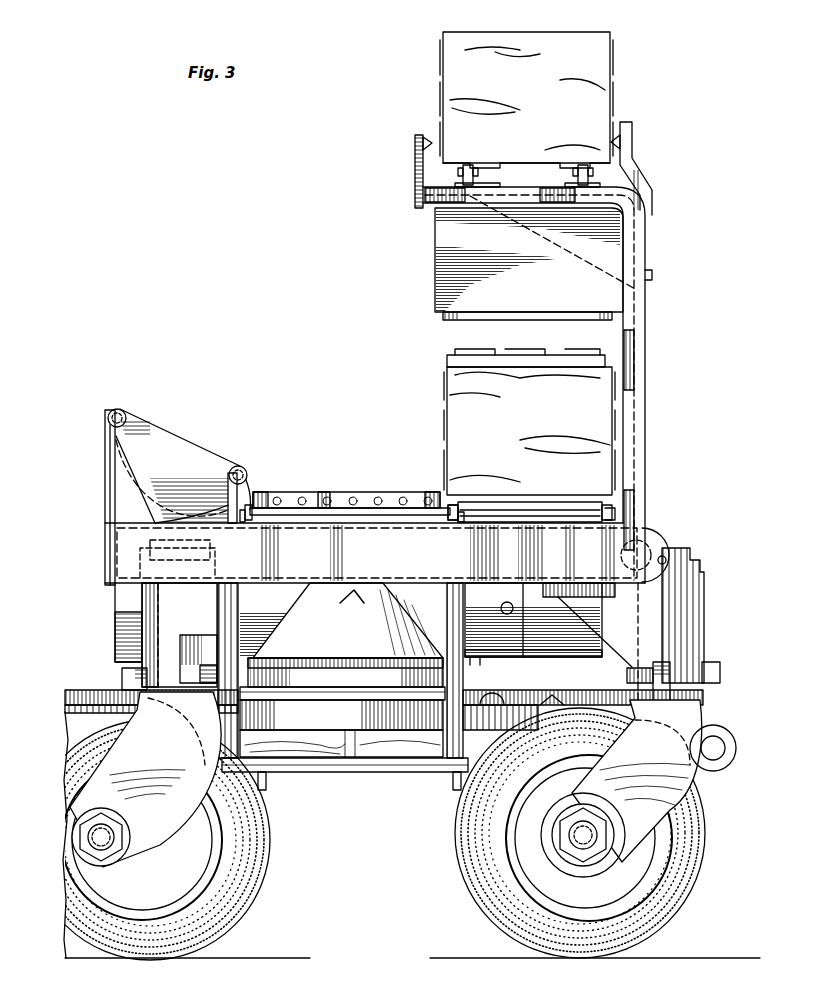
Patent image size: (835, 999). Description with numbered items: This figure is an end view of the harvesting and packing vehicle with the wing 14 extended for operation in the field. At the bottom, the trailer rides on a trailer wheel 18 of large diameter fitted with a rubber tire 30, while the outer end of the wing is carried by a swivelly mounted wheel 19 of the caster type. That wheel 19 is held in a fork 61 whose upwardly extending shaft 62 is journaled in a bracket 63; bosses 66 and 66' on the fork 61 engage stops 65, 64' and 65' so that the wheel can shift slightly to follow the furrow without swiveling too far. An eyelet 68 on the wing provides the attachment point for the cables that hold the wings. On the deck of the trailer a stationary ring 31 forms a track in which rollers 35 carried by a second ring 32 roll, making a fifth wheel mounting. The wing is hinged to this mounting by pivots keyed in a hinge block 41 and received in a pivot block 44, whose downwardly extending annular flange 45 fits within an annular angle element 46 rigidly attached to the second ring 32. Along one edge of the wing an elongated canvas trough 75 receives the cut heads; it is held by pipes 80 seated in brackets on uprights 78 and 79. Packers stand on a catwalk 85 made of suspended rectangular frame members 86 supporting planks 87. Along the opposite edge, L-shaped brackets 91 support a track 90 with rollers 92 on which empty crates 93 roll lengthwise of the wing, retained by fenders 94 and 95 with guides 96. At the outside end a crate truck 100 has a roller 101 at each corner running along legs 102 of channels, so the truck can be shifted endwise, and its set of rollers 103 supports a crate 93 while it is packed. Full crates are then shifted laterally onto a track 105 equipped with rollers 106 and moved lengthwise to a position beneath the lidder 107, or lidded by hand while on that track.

The wing 14 is at (125, 555).
The trailer wheel 18 is at (258, 898).
The swivelly mounted wheel 19 is at (215, 843).
The rubber tire 30 is at (262, 872).
The stationary ring 31 is at (522, 708).
The second ring 32 is at (553, 690).
The rollers 35 is at (362, 698).
The hinge block 41 is at (116, 592).
The pivot block 44 is at (356, 595).
The annular flange 45 is at (362, 668).
The annular angle element 46 is at (322, 672).
The fork 61 is at (138, 745).
The shaft 62 is at (152, 600).
The bracket 63 is at (140, 628).
The stop 64' is at (647, 655).
The stop 65 is at (188, 659).
The stop 65' is at (732, 671).
The boss 66 is at (116, 674).
The boss 66' is at (692, 670).
The eyelet 68 is at (720, 735).
The canvas trough 75 is at (118, 468).
The upright 78 is at (106, 497).
The upright 79 is at (228, 478).
The pipe 80 is at (117, 409).
The catwalk 85 is at (272, 771).
The frame member 86 is at (455, 770).
The plank 87 is at (385, 760).
The track 90 is at (490, 186).
The L-shaped bracket 91 is at (645, 322).
The roller 92 is at (468, 172).
The crate 93 is at (546, 40).
The fender 94 is at (633, 133).
The fender 95 is at (415, 163).
The guide 96 is at (428, 136).
The crate truck 100 is at (320, 492).
The roller 101 is at (252, 505).
The leg 102 is at (243, 522).
The rollers 103 is at (400, 498).
The track 105 is at (612, 522).
The rollers 106 is at (526, 503).
The lidder 107 is at (435, 266).